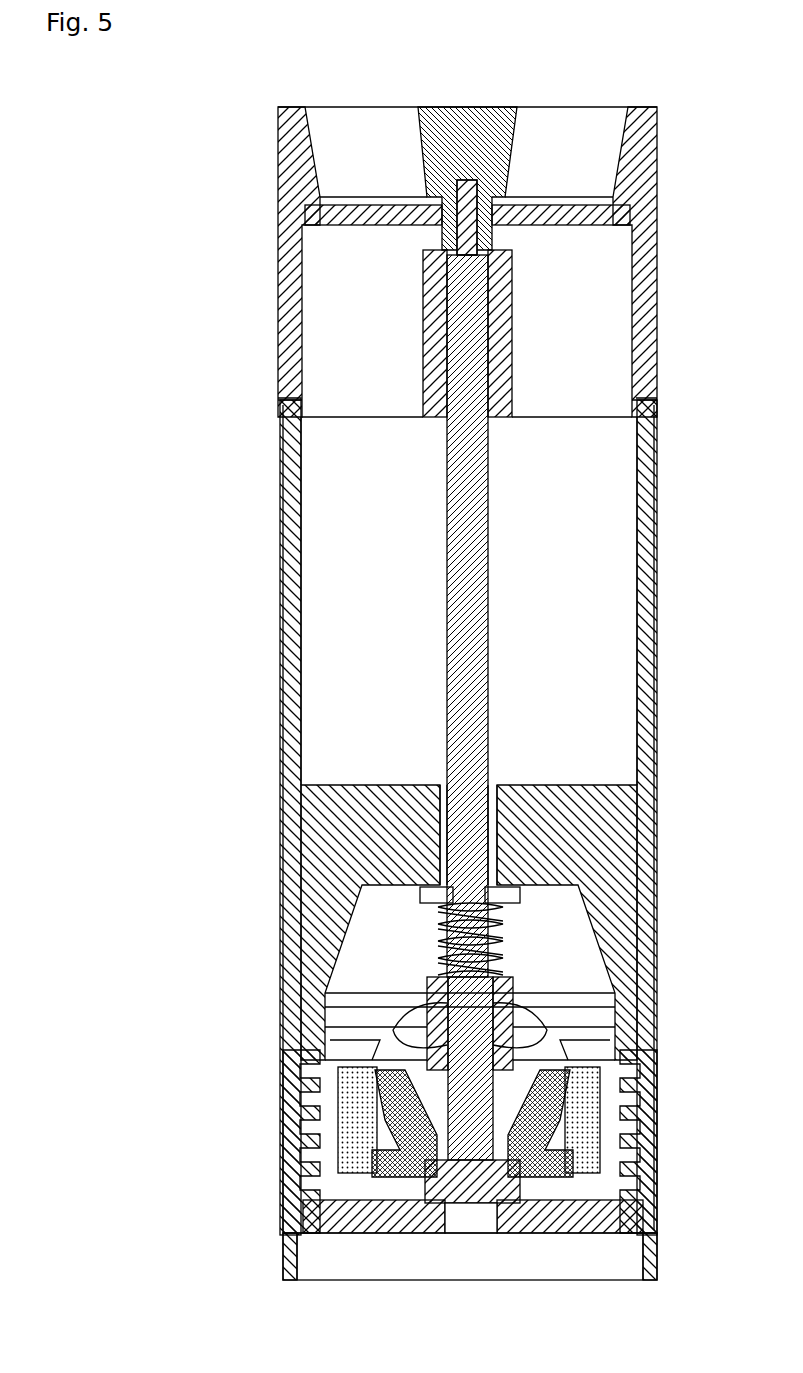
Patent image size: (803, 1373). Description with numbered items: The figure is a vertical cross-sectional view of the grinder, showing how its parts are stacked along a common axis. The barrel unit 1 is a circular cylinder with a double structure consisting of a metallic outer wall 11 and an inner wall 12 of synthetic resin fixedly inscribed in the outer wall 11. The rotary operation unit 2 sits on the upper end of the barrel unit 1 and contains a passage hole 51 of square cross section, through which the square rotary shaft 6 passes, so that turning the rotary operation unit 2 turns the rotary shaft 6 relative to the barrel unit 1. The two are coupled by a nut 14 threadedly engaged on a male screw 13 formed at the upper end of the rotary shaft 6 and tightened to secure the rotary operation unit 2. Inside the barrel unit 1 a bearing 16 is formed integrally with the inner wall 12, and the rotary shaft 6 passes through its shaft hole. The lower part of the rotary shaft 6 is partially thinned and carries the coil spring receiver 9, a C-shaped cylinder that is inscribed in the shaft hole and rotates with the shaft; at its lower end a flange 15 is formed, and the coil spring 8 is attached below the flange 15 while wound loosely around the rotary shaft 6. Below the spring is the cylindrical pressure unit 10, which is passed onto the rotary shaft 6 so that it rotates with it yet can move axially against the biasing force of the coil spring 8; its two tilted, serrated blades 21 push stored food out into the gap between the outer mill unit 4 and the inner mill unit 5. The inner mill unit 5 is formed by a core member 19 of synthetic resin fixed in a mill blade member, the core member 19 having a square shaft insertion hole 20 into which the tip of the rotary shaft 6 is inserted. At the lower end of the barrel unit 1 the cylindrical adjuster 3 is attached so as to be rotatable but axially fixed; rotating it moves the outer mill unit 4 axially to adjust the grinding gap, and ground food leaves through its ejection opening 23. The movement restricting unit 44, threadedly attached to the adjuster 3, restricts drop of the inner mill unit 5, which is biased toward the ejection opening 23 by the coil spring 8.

The barrel unit 1 is at (657, 740).
The rotary operation unit 2 is at (657, 300).
The adjuster 3 is at (283, 1220).
The outer mill unit 4 is at (613, 1030).
The inner mill unit 5 is at (580, 1235).
The rotary shaft 6 is at (490, 548).
The coil spring 8 is at (438, 932).
The coil spring receiver 9 is at (510, 785).
The pressure unit 10 is at (428, 984).
The outer wall 11 is at (657, 630).
The inner wall 12 is at (637, 678).
The male screw 13 is at (489, 243).
The nut 14 is at (470, 107).
The flange 15 is at (420, 893).
The bearing 16 is at (385, 785).
The core member 19 is at (470, 1172).
The shaft insertion hole 20 is at (503, 1170).
The blades 21 is at (527, 1020).
The ejection opening 23 is at (370, 1255).
The movement restricting unit 44 is at (394, 1235).
The passage hole 51 is at (494, 315).